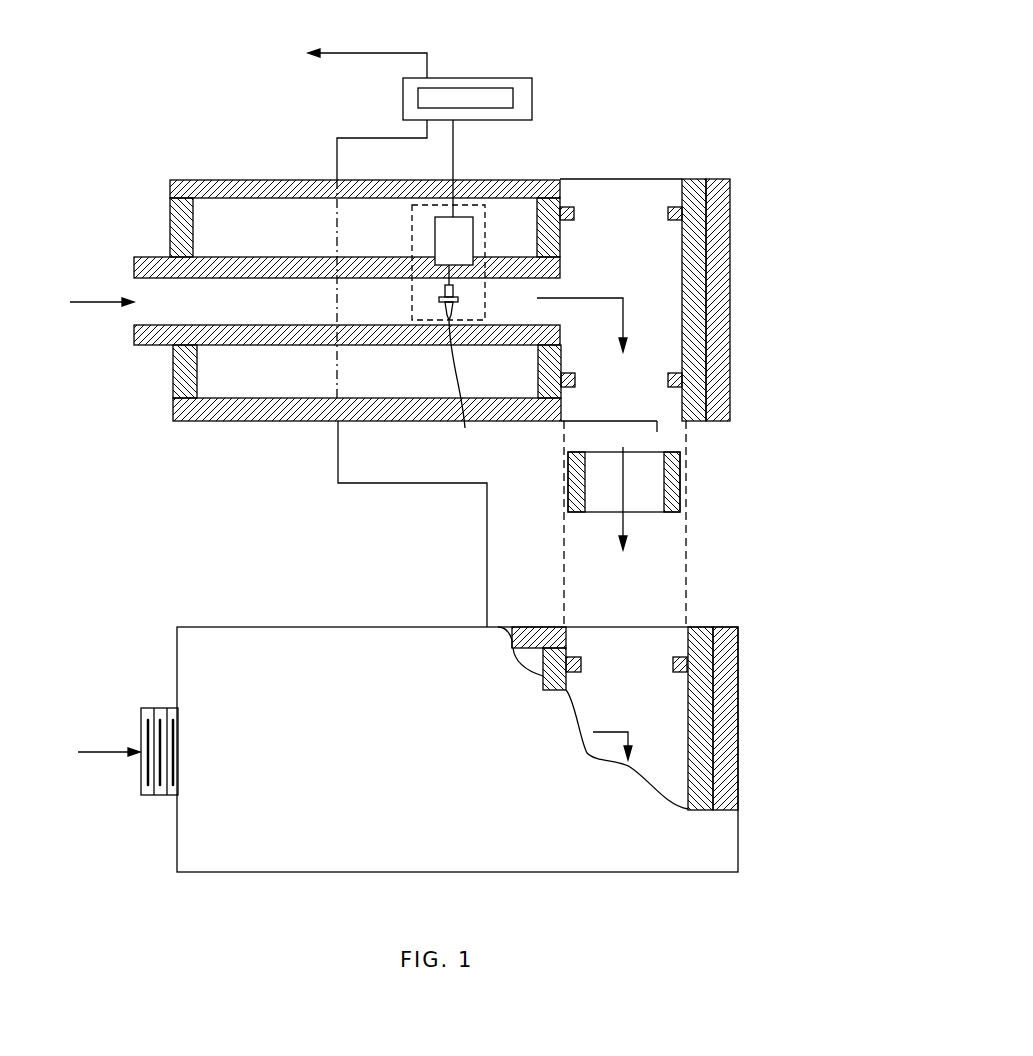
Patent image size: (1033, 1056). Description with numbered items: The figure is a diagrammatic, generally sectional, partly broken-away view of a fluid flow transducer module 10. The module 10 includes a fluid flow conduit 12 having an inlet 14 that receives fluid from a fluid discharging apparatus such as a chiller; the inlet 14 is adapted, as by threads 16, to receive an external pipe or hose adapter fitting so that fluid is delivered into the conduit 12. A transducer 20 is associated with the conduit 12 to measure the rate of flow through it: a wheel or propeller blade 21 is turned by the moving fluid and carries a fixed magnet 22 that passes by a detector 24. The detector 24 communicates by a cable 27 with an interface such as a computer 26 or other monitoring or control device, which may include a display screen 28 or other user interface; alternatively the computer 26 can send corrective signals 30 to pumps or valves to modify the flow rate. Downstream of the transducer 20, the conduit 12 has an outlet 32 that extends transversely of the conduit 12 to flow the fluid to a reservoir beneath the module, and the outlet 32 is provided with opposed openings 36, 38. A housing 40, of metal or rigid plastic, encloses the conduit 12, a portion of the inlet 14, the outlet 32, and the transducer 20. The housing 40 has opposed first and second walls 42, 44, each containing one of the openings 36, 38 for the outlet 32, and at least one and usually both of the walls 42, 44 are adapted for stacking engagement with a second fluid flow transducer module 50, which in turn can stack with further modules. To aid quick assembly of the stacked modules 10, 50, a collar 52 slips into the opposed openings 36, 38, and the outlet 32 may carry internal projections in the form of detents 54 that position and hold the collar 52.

The fluid flow transducer module 10 is at (544, 334).
The fluid flow conduit 12 is at (282, 257).
The conduit inlet 14 is at (147, 257).
The threads 16 is at (160, 718).
The transducer 20 is at (410, 288).
The propeller blade 21 is at (464, 388).
The magnet 22 is at (447, 284).
The detector 24 is at (470, 232).
The computer 26 is at (467, 78).
The cable 27 is at (455, 139).
The display screen 28 is at (515, 94).
The corrective signals 30 is at (351, 60).
The conduit outlet 32 is at (618, 262).
The opening 36 is at (663, 179).
The opening 38 is at (657, 432).
The housing 40 is at (225, 422).
The first wall 42 is at (358, 179).
The second wall 44 is at (283, 422).
The second fluid flow transducer module 50 is at (477, 748).
The collar 52 is at (680, 463).
The detent 54 is at (667, 212).